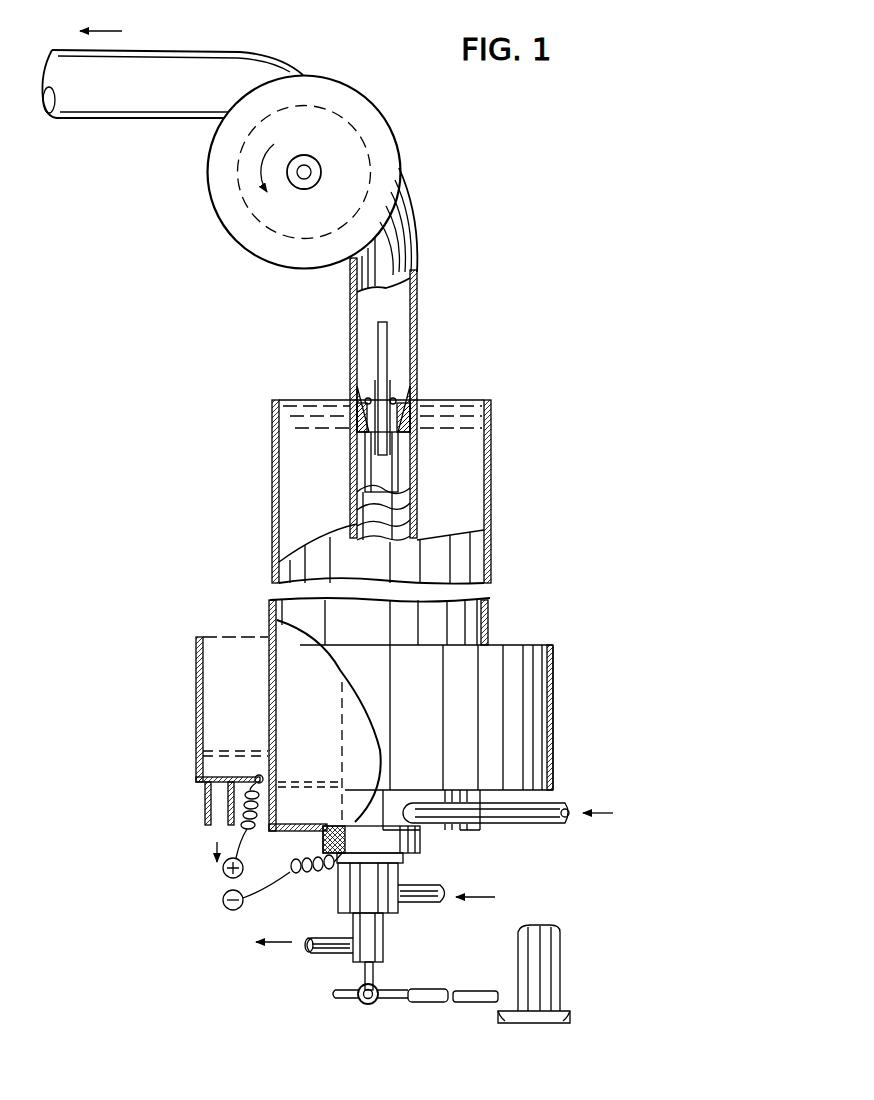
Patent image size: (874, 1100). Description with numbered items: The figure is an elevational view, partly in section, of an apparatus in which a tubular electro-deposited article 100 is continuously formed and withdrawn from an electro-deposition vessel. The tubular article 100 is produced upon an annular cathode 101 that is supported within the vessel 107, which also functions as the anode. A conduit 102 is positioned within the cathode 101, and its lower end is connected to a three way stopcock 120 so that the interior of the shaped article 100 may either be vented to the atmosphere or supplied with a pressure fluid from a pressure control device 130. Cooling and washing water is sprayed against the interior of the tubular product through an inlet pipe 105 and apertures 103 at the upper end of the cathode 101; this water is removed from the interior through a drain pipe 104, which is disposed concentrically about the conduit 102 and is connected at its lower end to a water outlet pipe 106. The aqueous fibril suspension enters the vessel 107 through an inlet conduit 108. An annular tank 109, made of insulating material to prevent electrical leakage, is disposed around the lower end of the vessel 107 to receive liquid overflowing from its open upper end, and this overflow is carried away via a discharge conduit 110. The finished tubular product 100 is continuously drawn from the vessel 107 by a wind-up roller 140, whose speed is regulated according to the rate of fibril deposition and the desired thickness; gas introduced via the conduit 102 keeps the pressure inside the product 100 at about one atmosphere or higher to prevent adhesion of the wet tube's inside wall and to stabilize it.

The tubular electro-deposited article 100 is at (248, 60).
The wind-up roller 140 is at (385, 115).
The conduit 102 is at (388, 335).
The apertures 103 is at (393, 398).
The drain pipe 104 is at (385, 468).
The annular cathode 101 is at (408, 430).
The vessel 107 is at (478, 567).
The annular tank 109 is at (232, 636).
The discharge conduit 110 is at (205, 805).
The inlet conduit 108 is at (565, 826).
The inlet pipe 105 is at (440, 885).
The water outlet pipe 106 is at (318, 952).
The three way stopcock 120 is at (362, 1002).
The pressure control device 130 is at (518, 960).